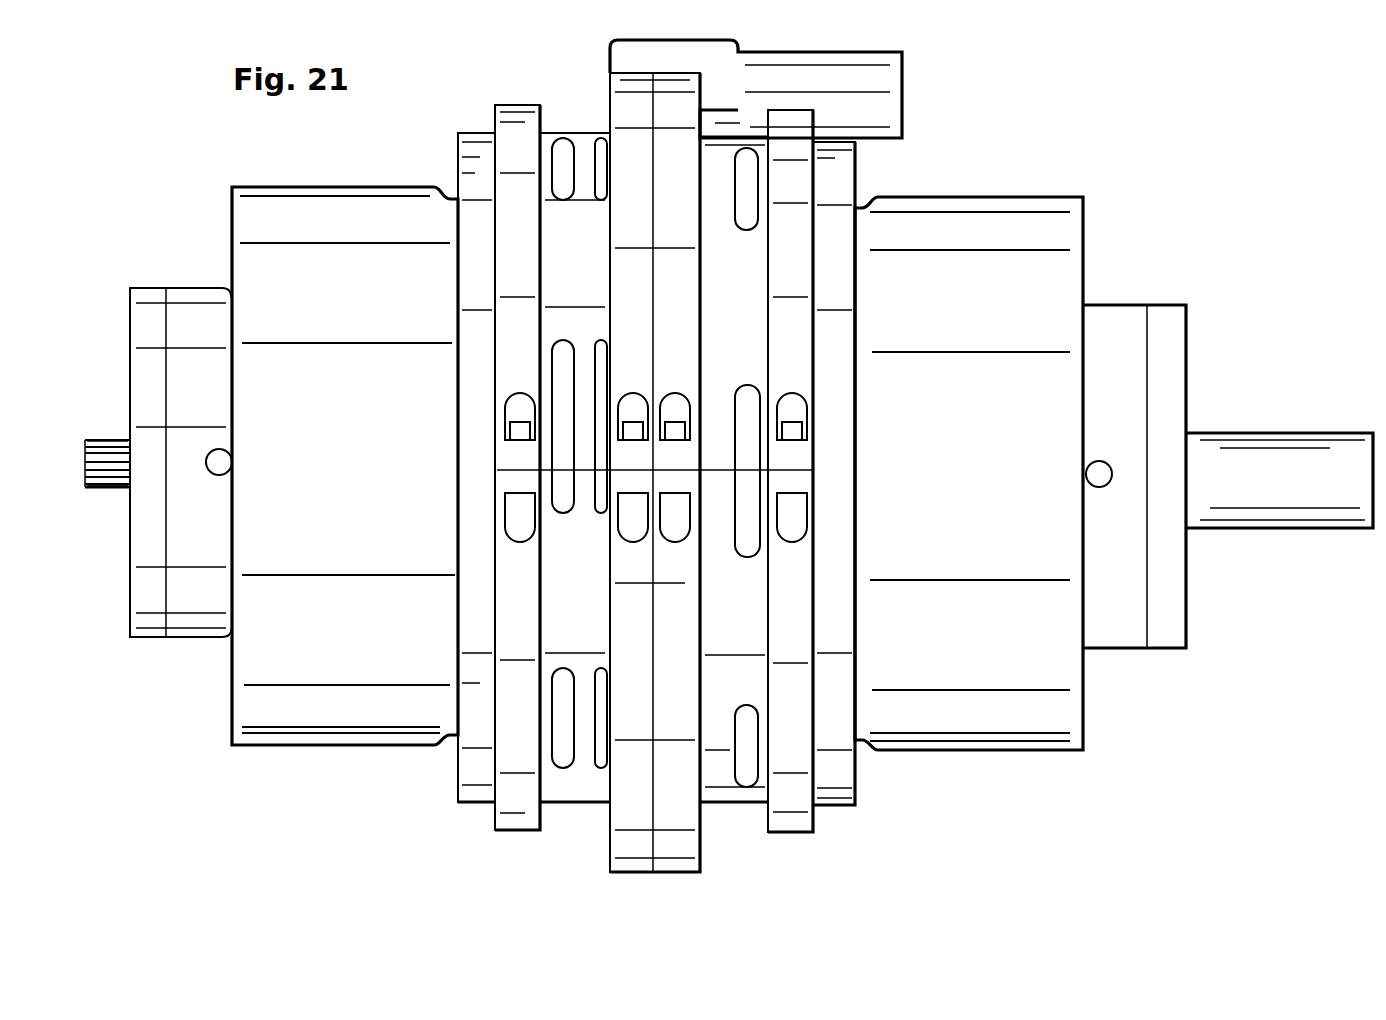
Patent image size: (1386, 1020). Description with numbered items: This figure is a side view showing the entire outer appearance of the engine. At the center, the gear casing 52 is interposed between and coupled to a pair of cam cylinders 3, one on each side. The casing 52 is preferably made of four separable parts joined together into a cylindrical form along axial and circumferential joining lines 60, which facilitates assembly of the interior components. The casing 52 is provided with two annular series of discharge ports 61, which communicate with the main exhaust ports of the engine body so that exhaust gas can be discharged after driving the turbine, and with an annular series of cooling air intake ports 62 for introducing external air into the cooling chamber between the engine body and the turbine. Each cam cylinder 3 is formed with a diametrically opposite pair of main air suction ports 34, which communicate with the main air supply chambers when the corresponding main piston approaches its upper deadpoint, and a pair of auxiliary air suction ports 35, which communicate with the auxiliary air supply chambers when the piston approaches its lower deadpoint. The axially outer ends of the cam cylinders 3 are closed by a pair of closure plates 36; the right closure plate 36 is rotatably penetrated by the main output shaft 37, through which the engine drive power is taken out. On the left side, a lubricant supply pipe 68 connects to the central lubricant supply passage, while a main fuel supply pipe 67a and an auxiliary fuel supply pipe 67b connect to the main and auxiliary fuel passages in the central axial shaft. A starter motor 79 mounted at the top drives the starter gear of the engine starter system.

The cam cylinder 3 is at (287, 717).
The main air suction port 34 is at (222, 463).
The auxiliary air suction port 35 is at (447, 197).
The closure plate 36 is at (145, 297).
The main output shaft 37 is at (1274, 508).
The gear casing 52 is at (722, 785).
The axial and circumferential joining lines 60 is at (653, 613).
The discharge port 61 is at (558, 365).
The cooling air intake port 62 is at (597, 353).
The main fuel supply pipe 67a is at (94, 490).
The auxiliary fuel supply pipe 67b is at (100, 440).
The lubricant supply pipe 68 is at (86, 458).
The starter motor 79 is at (867, 90).